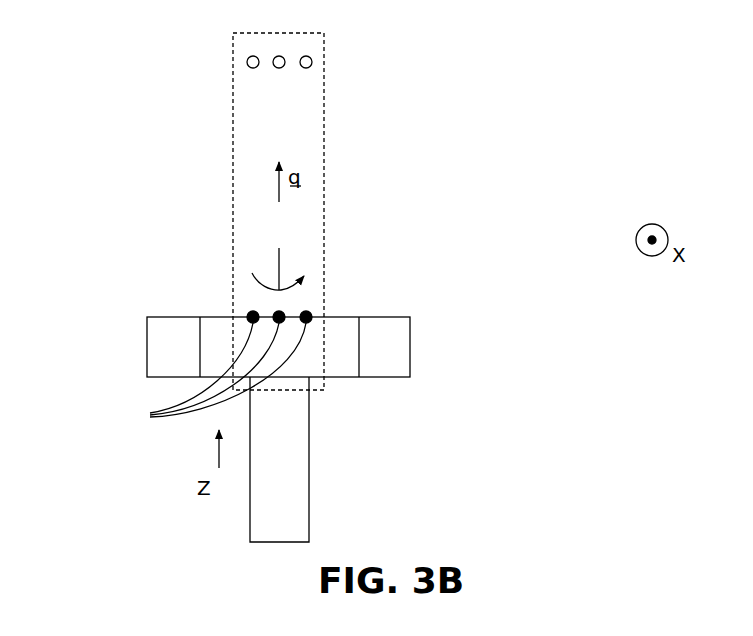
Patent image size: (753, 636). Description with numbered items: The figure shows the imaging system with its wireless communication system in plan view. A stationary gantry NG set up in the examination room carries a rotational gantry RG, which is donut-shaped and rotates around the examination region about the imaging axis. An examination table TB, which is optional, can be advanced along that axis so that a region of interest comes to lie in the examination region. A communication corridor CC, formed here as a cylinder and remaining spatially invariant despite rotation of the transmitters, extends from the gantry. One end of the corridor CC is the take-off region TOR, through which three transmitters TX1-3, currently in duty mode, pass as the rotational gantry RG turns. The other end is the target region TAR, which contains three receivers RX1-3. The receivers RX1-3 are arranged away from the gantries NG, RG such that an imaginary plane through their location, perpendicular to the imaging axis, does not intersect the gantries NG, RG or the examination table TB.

The communication corridor CC is at (222, 170).
The receivers RX1-3 is at (292, 72).
The target region TAR is at (253, 45).
The stationary gantry NG is at (416, 328).
The rotational gantry RG is at (337, 330).
The take-off region TOR is at (245, 328).
The transmitters TX1-3 is at (185, 375).
The examination table TB is at (287, 455).